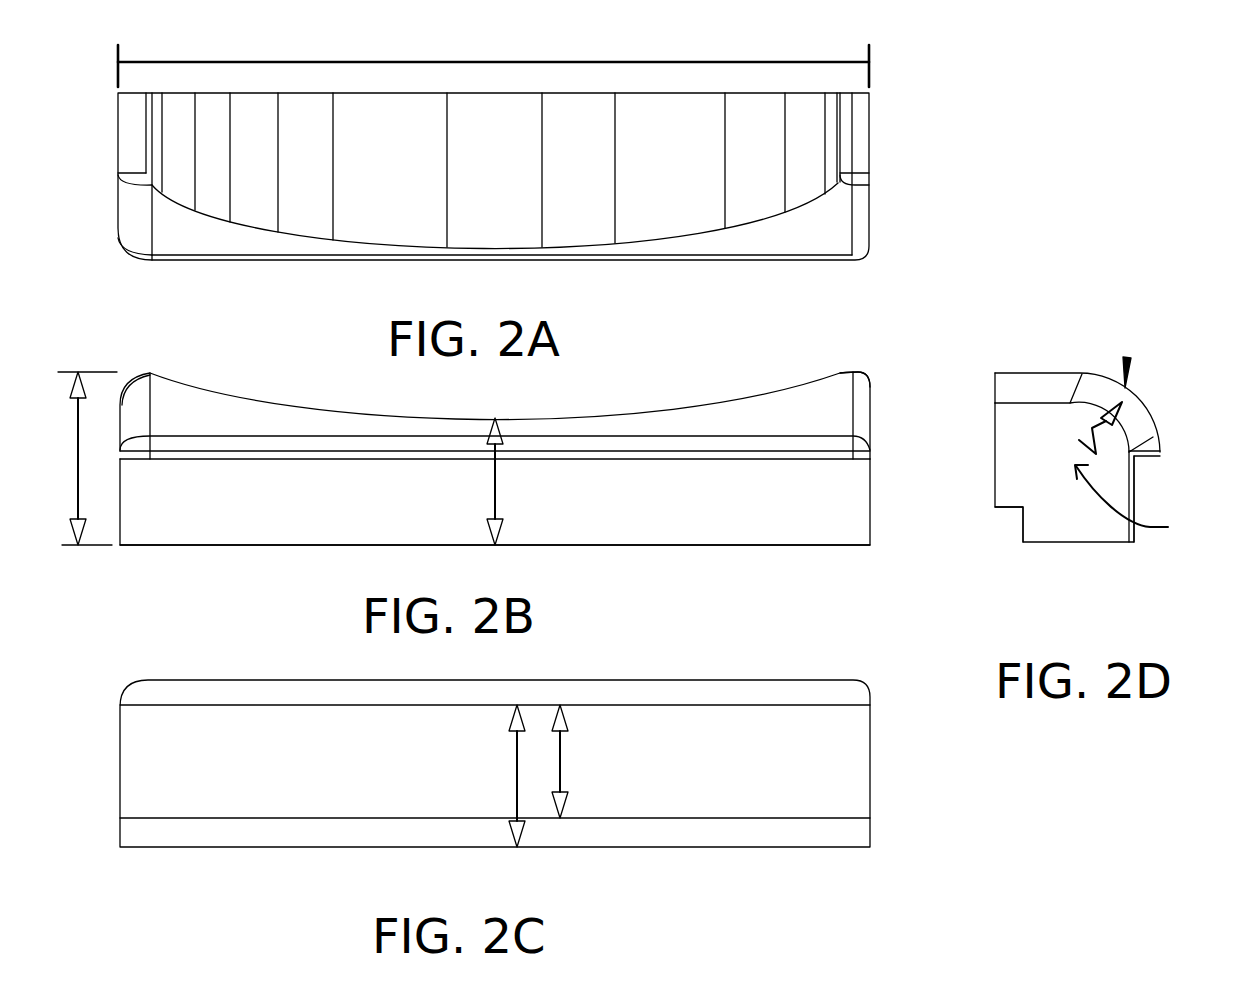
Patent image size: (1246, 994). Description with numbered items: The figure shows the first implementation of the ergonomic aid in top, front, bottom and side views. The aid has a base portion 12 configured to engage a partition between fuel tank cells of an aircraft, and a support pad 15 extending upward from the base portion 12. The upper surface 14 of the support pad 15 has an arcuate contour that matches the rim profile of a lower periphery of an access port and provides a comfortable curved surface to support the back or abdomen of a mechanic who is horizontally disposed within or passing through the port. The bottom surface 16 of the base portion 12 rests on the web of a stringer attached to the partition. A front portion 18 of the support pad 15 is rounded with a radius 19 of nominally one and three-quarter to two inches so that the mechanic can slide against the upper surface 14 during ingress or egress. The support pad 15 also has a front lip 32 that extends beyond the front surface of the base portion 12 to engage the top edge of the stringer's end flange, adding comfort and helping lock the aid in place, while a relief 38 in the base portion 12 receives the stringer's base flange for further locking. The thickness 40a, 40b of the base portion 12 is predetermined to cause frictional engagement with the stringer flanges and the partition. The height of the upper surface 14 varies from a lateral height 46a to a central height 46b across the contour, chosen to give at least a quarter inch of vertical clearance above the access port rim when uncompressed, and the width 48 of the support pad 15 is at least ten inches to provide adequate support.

In FIG. 2B, the base portion 12 is at (870, 528).
In FIG. 2D, the base portion 12 is at (1078, 510).
In FIG. 2A, the upper surface 14 is at (519, 199).
In FIG. 2B, the upper surface 14 is at (728, 402).
In FIG. 2D, the upper surface 14 is at (1079, 373).
In FIG. 2A, the support pad 15 is at (810, 162).
In FIG. 2B, the support pad 15 is at (873, 399).
In FIG. 2D, the support pad 15 is at (1125, 353).
In FIG. 2B, the bottom surface 16 is at (241, 545).
In FIG. 2C, the bottom surface 16 is at (325, 788).
In FIG. 2A, the front portion 18 is at (834, 249).
In FIG. 2B, the front portion 18 is at (832, 428).
In FIG. 2D, the radius 19 is at (1141, 504).
In FIG. 2B, the front lip 32 is at (828, 462).
In FIG. 2C, the front lip 32 is at (795, 690).
In FIG. 2D, the front lip 32 is at (1148, 463).
In FIG. 2C, the relief 38 is at (838, 830).
In FIG. 2D, the relief 38 is at (1010, 507).
In FIG. 2C, the thickness 40a is at (560, 763).
In FIG. 2C, the thickness 40b is at (515, 773).
In FIG. 2B, the lateral height 46a is at (78, 427).
In FIG. 2B, the central height 46b is at (492, 480).
In FIG. 2A, the width 48 is at (505, 57).